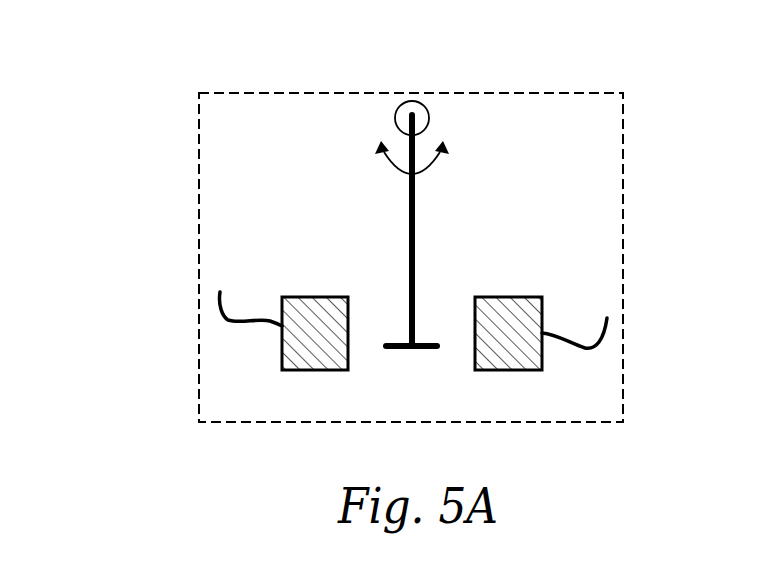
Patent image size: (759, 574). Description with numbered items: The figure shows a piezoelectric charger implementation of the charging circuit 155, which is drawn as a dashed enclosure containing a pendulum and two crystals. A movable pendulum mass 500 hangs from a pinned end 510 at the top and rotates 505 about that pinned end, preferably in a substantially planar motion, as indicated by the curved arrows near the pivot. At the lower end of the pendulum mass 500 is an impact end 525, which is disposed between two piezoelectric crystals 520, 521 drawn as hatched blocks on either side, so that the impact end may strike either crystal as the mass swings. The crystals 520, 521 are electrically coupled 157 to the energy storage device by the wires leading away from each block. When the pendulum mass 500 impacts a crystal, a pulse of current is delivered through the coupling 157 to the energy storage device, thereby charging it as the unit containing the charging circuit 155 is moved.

The charging circuit 155 is at (641, 140).
The coupling 157 is at (222, 326).
The movable pendulum mass 500 is at (409, 215).
The rotation 505 is at (397, 170).
The pinned end 510 is at (396, 122).
The piezoelectric crystal 520 is at (315, 370).
The piezoelectric crystal 521 is at (508, 370).
The impact end 525 is at (420, 350).